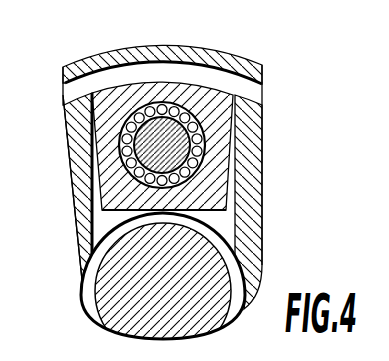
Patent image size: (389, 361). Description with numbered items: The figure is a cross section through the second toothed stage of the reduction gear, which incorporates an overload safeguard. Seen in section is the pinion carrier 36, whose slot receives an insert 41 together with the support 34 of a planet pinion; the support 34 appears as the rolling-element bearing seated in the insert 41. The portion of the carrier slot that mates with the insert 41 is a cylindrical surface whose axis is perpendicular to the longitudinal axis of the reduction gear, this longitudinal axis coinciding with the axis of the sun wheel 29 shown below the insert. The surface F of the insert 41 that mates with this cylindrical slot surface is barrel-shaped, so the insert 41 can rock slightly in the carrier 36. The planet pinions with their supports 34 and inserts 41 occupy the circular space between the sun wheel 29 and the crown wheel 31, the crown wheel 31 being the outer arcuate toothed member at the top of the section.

The crown wheel 31 is at (230, 68).
The pinion carrier 36 is at (78, 123).
The insert 41 is at (220, 168).
The support 34 is at (196, 174).
The sun wheel 29 is at (108, 285).
The surface F is at (238, 102).